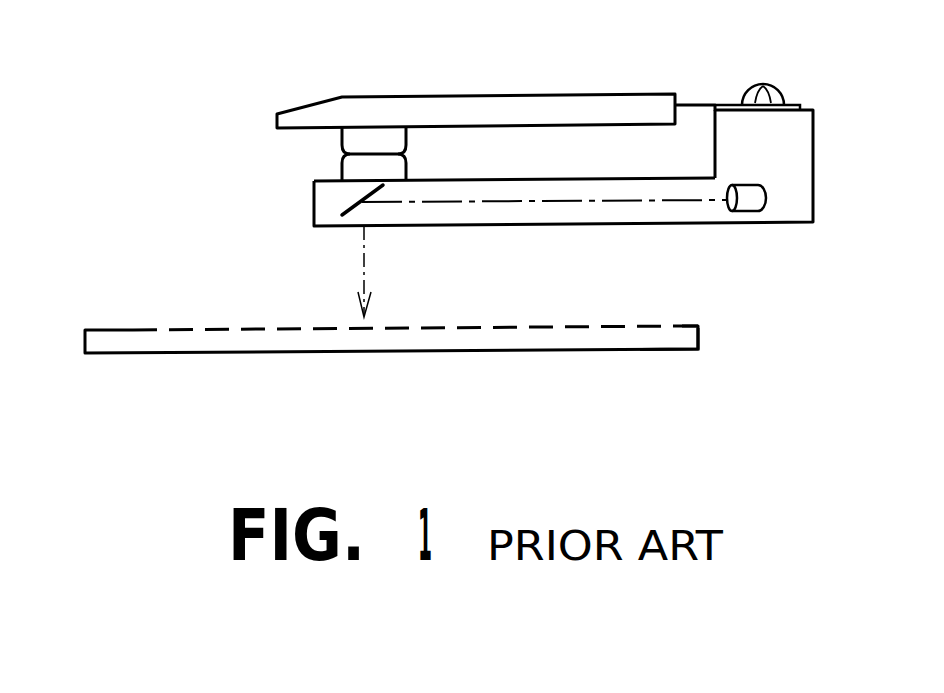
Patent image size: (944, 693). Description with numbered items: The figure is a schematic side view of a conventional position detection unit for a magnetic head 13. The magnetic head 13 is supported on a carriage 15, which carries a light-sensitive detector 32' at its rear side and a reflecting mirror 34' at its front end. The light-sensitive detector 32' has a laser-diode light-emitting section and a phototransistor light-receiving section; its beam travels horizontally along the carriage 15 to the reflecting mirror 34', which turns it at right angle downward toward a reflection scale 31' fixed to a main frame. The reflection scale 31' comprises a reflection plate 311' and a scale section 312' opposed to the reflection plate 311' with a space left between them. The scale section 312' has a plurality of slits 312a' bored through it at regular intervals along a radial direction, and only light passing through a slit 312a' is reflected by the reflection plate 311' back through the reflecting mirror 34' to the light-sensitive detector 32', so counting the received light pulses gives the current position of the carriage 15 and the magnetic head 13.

The magnetic head 13 is at (376, 138).
The carriage 15 is at (792, 137).
The reflecting mirror 34' is at (290, 240).
The light-sensitive detector 32' is at (782, 238).
The reflection scale 31' is at (391, 382).
The scale section 312' is at (352, 280).
The slits 312a' is at (753, 338).
The reflection plate 311' is at (679, 383).